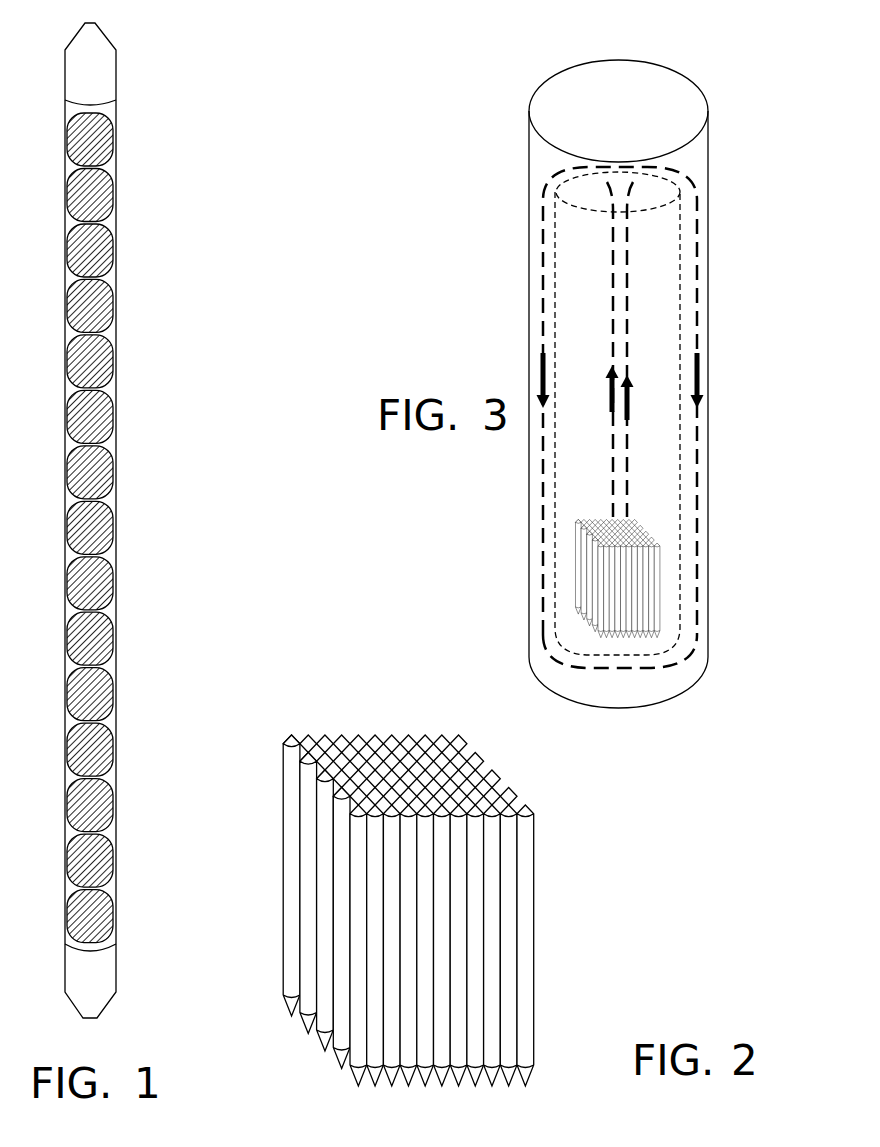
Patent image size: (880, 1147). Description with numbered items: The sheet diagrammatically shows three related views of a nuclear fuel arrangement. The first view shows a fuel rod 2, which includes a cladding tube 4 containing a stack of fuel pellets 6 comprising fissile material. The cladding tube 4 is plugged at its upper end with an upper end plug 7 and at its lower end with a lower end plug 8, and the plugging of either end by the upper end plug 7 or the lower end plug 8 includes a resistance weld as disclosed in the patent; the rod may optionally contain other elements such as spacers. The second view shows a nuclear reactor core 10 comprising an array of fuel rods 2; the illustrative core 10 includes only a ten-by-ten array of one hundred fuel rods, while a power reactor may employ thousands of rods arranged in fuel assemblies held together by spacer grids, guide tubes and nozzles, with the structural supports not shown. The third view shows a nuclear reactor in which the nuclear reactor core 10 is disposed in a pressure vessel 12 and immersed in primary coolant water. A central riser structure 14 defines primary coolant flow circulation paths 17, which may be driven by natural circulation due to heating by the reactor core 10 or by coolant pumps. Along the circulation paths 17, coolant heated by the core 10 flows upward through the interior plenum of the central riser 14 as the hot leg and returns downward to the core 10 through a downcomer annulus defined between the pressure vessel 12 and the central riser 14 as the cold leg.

In FIG. 1, the fuel rod 2 is at (179, 520).
In FIG. 2, the fuel rod 2 is at (520, 928).
In FIG. 1, the cladding tube 4 is at (116, 282).
In FIG. 1, the fuel pellets 6 is at (95, 477).
In FIG. 1, the upper end plug 7 is at (95, 78).
In FIG. 1, the lower end plug 8 is at (95, 980).
In FIG. 2, the nuclear reactor core 10 is at (501, 910).
In FIG. 3, the nuclear reactor core 10 is at (662, 583).
In FIG. 3, the pressure vessel 12 is at (708, 223).
In FIG. 3, the central riser structure 14 is at (680, 290).
In FIG. 3, the primary coolant flow circulation paths 17 is at (543, 512).